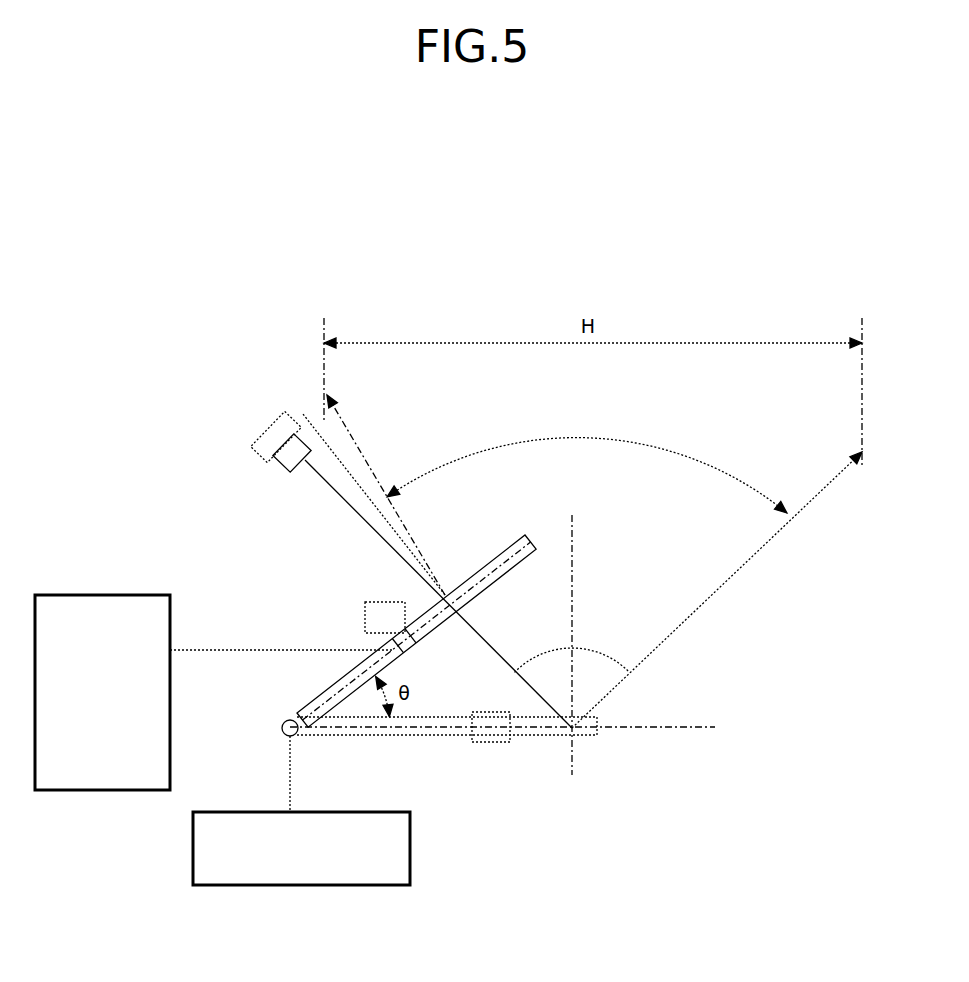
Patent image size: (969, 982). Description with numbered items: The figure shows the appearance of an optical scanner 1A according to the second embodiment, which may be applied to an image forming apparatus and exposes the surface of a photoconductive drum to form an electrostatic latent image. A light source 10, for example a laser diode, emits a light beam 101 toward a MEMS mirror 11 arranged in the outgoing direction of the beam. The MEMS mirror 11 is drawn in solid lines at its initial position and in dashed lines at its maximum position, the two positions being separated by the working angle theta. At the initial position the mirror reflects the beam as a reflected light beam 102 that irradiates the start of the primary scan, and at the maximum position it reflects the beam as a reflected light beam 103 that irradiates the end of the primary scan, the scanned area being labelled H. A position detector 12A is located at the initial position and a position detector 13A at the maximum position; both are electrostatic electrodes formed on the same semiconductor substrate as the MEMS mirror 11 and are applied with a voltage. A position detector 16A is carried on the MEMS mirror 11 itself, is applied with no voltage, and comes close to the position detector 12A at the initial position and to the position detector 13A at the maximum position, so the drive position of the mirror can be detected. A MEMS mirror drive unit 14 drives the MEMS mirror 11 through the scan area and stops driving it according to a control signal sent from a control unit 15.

The optical scanner 1A is at (241, 201).
The light source 10 is at (271, 426).
The light beam 101 is at (340, 502).
The reflected light beam 102 is at (362, 455).
The reflected light beam 103 is at (803, 500).
The MEMS mirror 11 is at (313, 694).
The position detector 12A is at (370, 600).
The position detector 13A is at (498, 745).
The MEMS mirror drive unit 14 is at (300, 886).
The control unit 15 is at (112, 594).
The position detector 16A is at (417, 653).